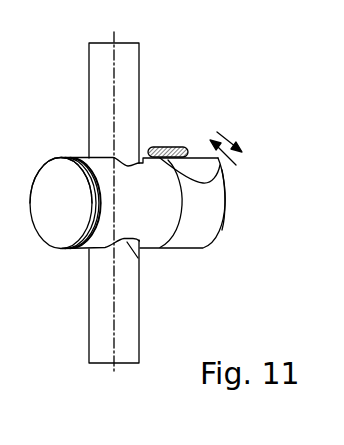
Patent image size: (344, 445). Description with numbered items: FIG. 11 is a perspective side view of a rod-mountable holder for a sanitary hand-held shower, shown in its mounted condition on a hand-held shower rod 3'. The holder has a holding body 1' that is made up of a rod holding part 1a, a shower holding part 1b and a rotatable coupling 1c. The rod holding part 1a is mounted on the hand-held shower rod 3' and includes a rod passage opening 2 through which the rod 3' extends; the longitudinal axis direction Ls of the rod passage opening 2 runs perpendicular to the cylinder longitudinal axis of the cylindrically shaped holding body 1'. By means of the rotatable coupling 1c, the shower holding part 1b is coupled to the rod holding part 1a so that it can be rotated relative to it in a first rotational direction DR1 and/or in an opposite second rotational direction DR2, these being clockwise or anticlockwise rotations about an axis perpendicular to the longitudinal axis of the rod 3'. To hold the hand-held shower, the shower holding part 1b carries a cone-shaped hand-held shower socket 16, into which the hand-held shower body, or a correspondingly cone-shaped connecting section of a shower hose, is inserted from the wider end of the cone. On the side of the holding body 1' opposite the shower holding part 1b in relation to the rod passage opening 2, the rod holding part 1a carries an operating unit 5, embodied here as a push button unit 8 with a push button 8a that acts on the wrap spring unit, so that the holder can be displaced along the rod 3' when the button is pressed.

The hand-held shower rod 3' is at (141, 203).
The push button unit 8 is at (62, 170).
The push button 8a is at (43, 232).
The operating unit 5 is at (77, 249).
The rod passage opening 2 is at (138, 256).
The holding body 1' is at (182, 232).
The rod holding part 1a is at (163, 228).
The shower holding part 1b is at (210, 221).
The rotatable coupling 1c is at (183, 197).
The hand-held shower socket 16 is at (178, 148).
The longitudinal axis direction Ls is at (112, 315).
The first rotational direction DR1 is at (237, 165).
The second rotational direction DR2 is at (223, 137).